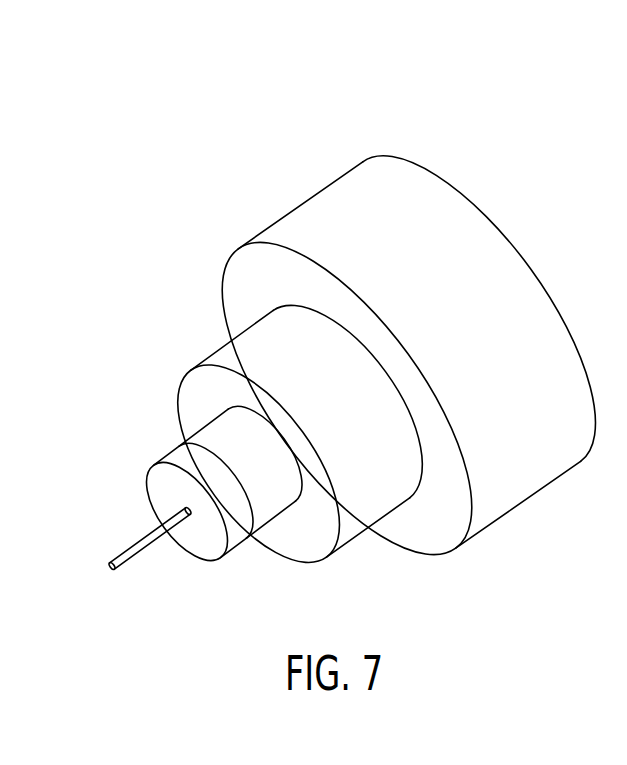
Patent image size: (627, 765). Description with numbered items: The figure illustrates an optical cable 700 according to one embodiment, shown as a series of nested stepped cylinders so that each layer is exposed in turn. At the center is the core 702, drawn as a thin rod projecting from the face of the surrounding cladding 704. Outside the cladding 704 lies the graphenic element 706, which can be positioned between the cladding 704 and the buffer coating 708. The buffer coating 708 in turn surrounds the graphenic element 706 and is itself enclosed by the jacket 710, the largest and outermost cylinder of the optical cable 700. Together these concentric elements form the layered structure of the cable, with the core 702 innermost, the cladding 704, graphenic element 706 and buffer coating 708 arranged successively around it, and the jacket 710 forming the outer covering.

The optical cable 700 is at (210, 126).
The core 702 is at (132, 545).
The cladding 704 is at (178, 458).
The graphenic element 706 is at (258, 520).
The buffer coating 708 is at (195, 380).
The jacket 710 is at (242, 267).